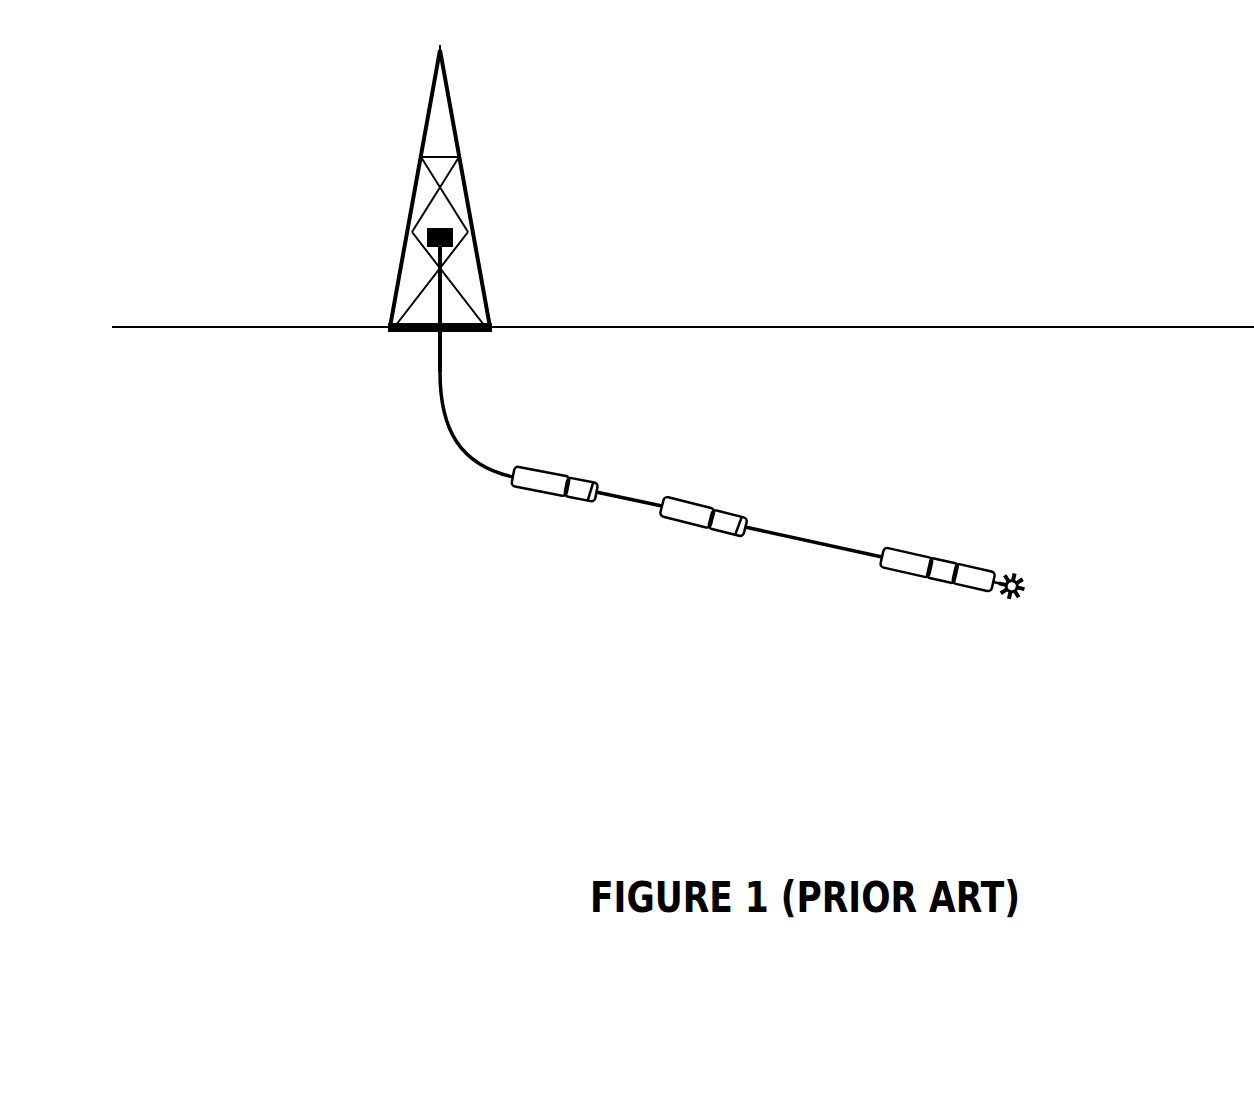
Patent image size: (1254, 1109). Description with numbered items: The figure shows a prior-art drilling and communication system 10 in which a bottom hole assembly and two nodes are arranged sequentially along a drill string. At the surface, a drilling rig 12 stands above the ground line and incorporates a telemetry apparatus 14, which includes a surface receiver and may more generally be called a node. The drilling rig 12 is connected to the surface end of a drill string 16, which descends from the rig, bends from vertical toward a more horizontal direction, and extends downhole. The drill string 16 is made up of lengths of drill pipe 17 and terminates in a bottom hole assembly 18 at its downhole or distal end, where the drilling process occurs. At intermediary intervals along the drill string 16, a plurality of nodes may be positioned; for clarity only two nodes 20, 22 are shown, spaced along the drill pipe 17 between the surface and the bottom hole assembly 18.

The drilling and communication system 10 is at (957, 203).
The drilling rig 12 is at (470, 181).
The telemetry apparatus 14 is at (447, 226).
The drill string 16 is at (463, 432).
The drill pipe 17 is at (783, 562).
The bottom hole assembly 18 is at (965, 530).
The node 20 is at (708, 488).
The node 22 is at (562, 453).